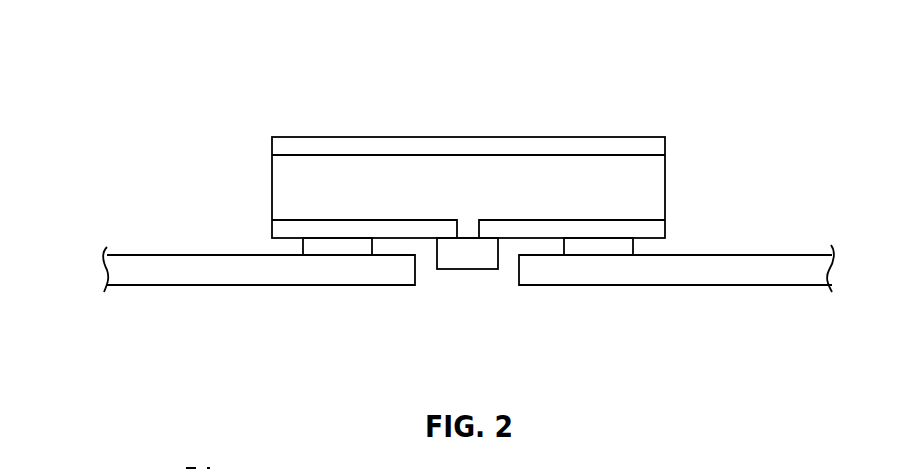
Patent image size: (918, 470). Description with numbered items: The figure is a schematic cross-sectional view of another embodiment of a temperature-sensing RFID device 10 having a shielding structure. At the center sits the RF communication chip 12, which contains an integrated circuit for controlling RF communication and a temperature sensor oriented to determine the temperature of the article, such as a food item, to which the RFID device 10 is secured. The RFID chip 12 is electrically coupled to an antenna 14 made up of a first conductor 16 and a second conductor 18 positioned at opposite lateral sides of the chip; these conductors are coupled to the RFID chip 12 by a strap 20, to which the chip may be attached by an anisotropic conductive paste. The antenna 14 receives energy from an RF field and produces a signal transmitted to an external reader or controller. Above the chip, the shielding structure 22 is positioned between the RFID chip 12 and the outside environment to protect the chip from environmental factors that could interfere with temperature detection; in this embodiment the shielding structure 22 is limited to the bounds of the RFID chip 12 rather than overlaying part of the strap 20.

The RFID device 10 is at (110, 331).
The RF communication chip 12 is at (468, 272).
The antenna 14 is at (732, 251).
The first conductor 16 is at (252, 270).
The second conductor 18 is at (672, 270).
The strap 20 is at (303, 249).
The shielding structure 22 is at (473, 150).